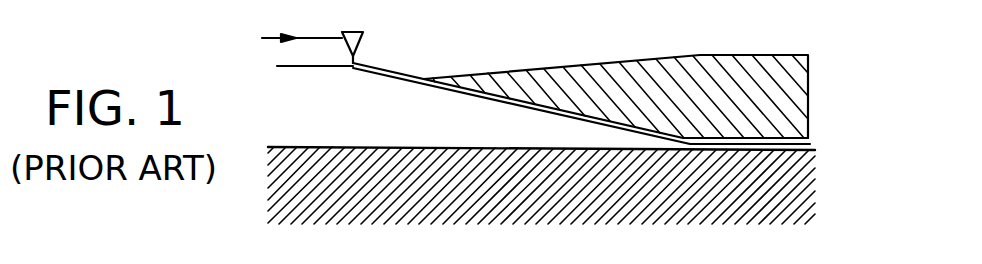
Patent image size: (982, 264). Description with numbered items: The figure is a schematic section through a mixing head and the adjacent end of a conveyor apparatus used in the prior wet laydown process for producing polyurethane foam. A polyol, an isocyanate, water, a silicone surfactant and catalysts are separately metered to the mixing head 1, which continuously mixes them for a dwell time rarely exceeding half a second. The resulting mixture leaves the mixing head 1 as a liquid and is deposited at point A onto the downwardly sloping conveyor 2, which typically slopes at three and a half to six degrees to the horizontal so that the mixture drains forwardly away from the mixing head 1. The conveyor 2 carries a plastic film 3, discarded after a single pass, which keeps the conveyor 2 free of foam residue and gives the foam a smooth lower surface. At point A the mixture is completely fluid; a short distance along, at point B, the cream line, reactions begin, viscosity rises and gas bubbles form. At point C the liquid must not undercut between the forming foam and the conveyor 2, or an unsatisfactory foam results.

The mixing head 1 is at (362, 32).
The conveyor 2 is at (497, 102).
The plastic film 3 is at (573, 113).
The point A is at (352, 70).
The point B (cream line) B is at (412, 83).
The point C is at (485, 90).